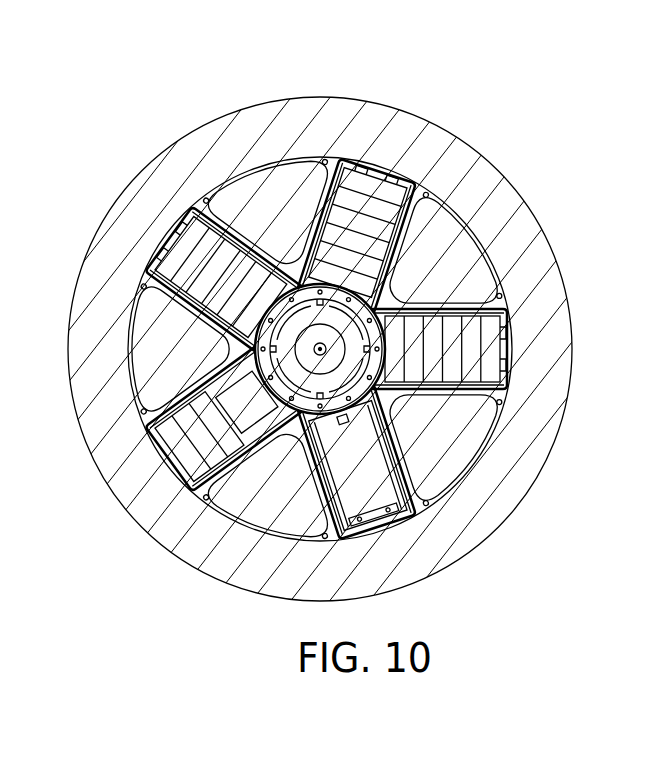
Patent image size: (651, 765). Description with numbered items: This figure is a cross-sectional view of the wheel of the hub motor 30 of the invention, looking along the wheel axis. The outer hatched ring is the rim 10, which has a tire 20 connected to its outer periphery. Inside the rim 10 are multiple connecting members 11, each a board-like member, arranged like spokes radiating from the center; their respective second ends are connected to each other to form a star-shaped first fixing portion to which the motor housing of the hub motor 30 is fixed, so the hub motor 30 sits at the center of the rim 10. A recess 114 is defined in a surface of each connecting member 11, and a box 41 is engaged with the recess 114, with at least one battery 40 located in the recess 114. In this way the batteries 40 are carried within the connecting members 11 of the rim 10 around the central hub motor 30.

The rim 10 is at (255, 163).
The connecting member 11 is at (235, 227).
The tire 20 is at (303, 110).
The hub motor 30 is at (393, 412).
The battery 40 is at (377, 183).
The box 41 is at (403, 248).
The recess 114 is at (402, 255).